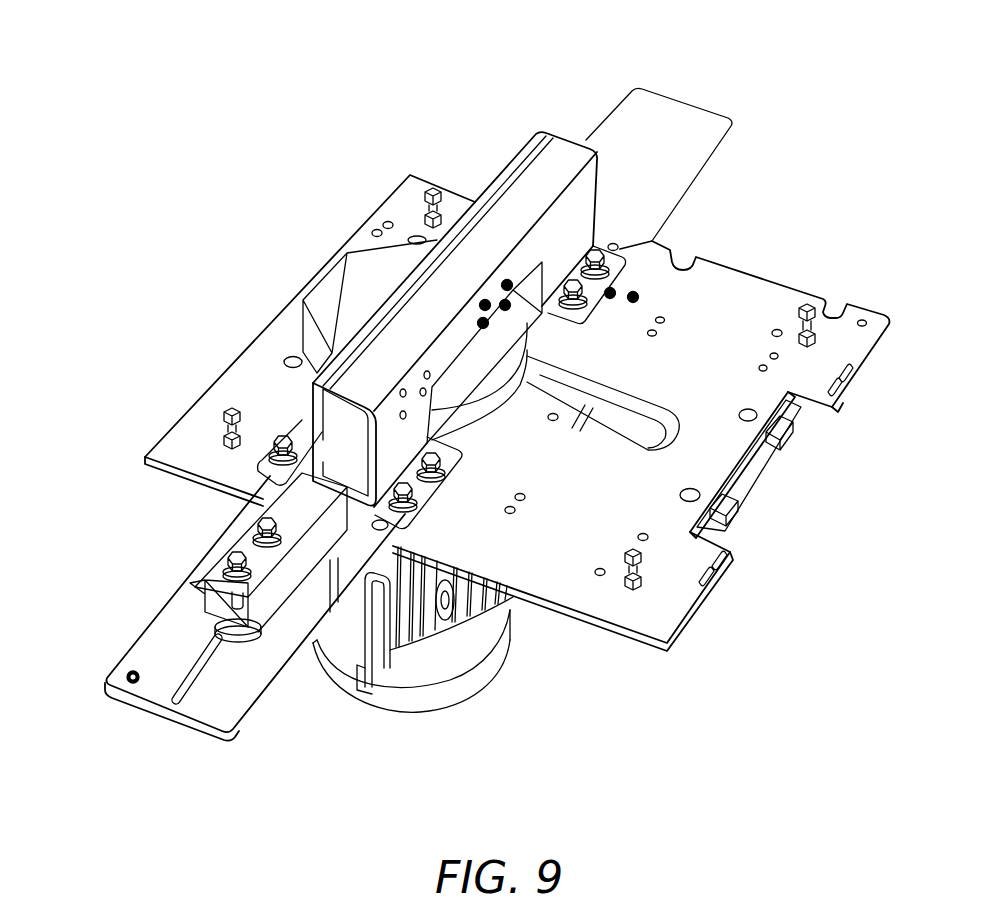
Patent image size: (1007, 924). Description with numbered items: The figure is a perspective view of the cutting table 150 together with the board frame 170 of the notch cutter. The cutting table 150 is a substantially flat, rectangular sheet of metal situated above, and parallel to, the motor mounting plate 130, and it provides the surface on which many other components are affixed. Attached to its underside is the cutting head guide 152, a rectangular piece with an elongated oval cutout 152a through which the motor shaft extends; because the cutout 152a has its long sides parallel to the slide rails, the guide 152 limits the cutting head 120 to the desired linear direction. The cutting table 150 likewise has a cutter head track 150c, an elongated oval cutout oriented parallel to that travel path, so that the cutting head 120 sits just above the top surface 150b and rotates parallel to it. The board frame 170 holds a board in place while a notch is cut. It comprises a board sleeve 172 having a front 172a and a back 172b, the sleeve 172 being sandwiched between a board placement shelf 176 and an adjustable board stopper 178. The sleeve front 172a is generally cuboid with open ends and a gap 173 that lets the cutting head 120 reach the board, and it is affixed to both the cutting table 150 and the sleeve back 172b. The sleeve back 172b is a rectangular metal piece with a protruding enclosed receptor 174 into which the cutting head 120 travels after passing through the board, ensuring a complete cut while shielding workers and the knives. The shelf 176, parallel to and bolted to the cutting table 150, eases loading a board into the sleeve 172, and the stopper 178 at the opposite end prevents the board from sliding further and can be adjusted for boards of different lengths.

The cutting head 120 is at (473, 362).
The motor mounting plate 130 is at (533, 404).
The cutting table 150 is at (822, 300).
The top surface 150b is at (736, 349).
The cutter head track 150c is at (635, 469).
The cutting head guide 152 is at (747, 483).
The elongated oval cutout 152a is at (644, 406).
The board frame 170 is at (288, 220).
The board sleeve 172 is at (558, 172).
The sleeve front 172a is at (586, 210).
The sleeve back 172b is at (477, 175).
The gap 173 is at (547, 321).
The receptor 174 is at (342, 307).
The board placement shelf 176 is at (769, 113).
The board stopper 178 is at (133, 547).